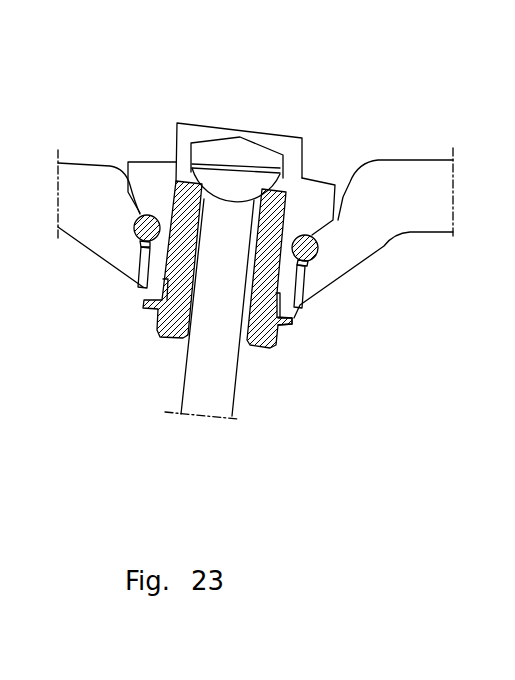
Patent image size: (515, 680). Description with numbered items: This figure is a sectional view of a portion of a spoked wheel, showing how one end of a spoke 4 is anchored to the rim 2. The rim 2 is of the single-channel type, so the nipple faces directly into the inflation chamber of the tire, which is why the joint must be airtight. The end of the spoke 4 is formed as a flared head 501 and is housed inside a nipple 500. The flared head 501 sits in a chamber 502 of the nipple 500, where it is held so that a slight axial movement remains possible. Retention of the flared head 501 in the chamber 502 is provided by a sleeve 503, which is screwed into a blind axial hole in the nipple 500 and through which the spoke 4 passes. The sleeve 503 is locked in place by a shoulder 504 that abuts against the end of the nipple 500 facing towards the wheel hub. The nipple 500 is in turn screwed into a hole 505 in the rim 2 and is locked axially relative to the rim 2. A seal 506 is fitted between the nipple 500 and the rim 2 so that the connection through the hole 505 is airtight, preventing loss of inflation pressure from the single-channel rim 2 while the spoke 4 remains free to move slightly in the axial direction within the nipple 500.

The nipple 500 is at (270, 114).
The flared head 501 is at (252, 189).
The chamber 502 is at (200, 148).
The sleeve 503 is at (279, 273).
The shoulder 504 is at (284, 327).
The hole 505 is at (143, 291).
The seal 506 is at (71, 163).
The rim 2 is at (440, 189).
The spoke 4 is at (214, 398).